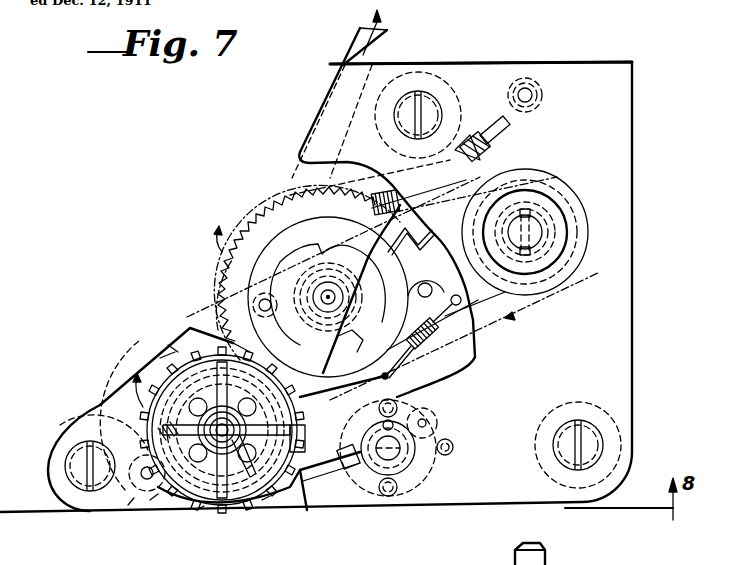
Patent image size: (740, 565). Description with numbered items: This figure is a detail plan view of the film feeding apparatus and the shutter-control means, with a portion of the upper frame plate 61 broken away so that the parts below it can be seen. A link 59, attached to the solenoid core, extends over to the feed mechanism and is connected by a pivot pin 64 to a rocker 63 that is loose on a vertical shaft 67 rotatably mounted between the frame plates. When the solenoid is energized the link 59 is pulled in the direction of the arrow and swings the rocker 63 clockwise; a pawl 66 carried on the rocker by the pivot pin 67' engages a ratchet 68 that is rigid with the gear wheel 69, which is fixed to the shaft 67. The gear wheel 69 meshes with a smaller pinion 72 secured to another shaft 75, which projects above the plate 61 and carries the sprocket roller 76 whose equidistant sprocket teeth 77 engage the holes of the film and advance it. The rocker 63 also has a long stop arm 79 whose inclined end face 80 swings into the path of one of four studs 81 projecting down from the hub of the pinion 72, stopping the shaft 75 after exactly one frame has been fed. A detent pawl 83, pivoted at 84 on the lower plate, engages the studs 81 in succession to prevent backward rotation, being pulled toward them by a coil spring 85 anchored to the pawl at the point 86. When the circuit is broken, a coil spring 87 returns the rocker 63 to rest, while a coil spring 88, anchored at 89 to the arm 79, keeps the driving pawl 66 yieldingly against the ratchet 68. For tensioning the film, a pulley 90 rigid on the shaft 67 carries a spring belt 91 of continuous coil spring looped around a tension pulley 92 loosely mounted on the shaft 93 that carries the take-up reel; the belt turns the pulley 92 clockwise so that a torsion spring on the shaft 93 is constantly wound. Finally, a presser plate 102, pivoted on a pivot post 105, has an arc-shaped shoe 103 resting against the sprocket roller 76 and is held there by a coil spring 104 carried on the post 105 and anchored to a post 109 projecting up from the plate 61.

The link 59 is at (378, 44).
The upper frame plate 61 is at (625, 382).
The rocker 63 is at (418, 262).
The pivot pin 64 is at (218, 292).
The pawl 66 is at (410, 333).
The vertical shaft 67 is at (328, 281).
The pivot pin 67' is at (454, 283).
The ratchet 68 is at (348, 345).
The gear wheel 69 is at (270, 210).
The pinion 72 is at (138, 377).
The shaft 75 is at (240, 510).
The sprocket roller 76 is at (190, 328).
The sprocket teeth 77 is at (170, 347).
The stop arm 79 is at (304, 404).
The inclined end face 80 is at (306, 440).
The studs 81 is at (162, 356).
The detent pawl 83 is at (200, 512).
The pivot 84 is at (130, 505).
The coil spring 85 is at (106, 408).
The anchor point 86 is at (154, 503).
The coil spring 87 is at (506, 150).
The coil spring 88 is at (477, 357).
The anchor point 89 is at (440, 378).
The pulley 90 is at (272, 238).
The spring belt 91 is at (392, 188).
The tension pulley 92 is at (572, 262).
The shaft 93 is at (540, 228).
The presser plate 102 is at (309, 508).
The shoe 103 is at (264, 506).
The coil spring 104 is at (388, 468).
The pivot post 105 is at (417, 467).
The post 109 is at (453, 447).